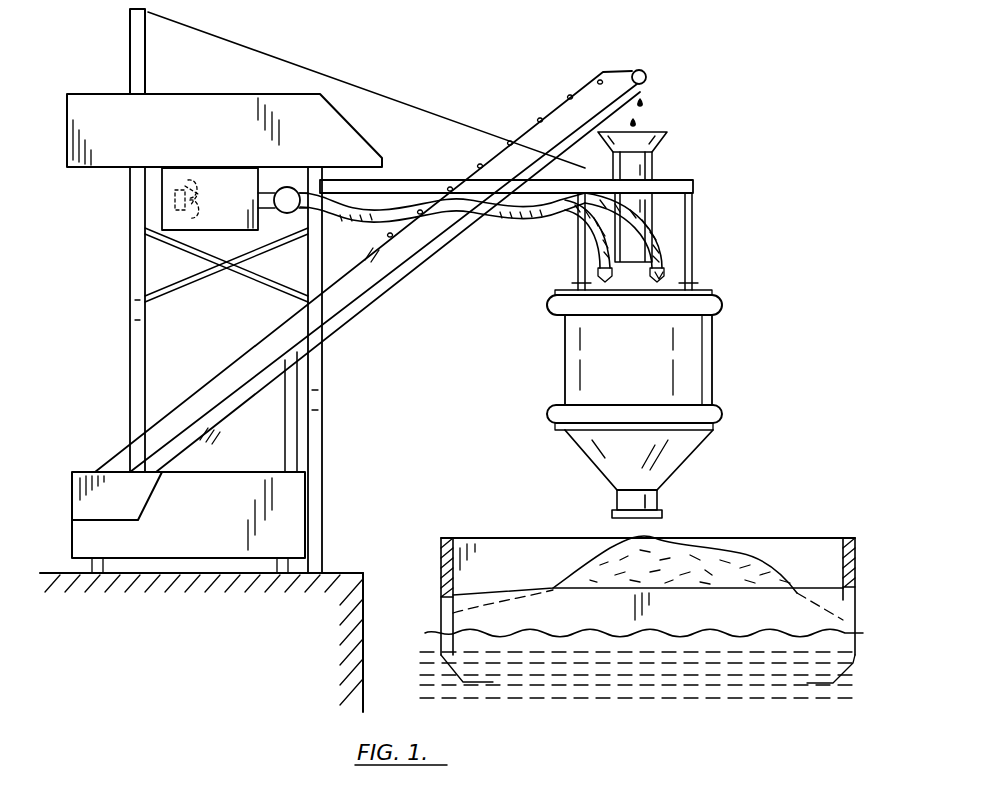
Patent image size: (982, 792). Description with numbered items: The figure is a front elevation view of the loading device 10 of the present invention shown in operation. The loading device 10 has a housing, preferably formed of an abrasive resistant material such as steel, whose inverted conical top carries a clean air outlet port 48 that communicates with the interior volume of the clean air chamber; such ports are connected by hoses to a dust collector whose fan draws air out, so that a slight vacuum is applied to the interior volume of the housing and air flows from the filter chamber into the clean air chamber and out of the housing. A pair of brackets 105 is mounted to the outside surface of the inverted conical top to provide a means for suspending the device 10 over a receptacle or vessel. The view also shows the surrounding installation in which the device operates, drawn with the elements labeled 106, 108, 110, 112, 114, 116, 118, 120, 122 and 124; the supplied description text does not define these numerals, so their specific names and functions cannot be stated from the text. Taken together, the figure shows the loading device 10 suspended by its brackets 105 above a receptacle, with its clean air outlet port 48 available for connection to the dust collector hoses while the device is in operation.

The loading device 10 is at (718, 370).
The clean air outlet port 48 is at (660, 272).
The brackets 105 is at (577, 281).
The base 106 is at (72, 527).
The pit / tank 108 is at (793, 540).
The support beam 110 is at (680, 178).
The delivery pipes 112 is at (575, 240).
The boom head / cable support 114 is at (288, 88).
The conveyor 116 is at (350, 317).
The funnel 118 is at (657, 162).
The flexible hose 120 is at (496, 220).
The coupling 122 is at (287, 186).
The pump / motor 124 is at (158, 192).